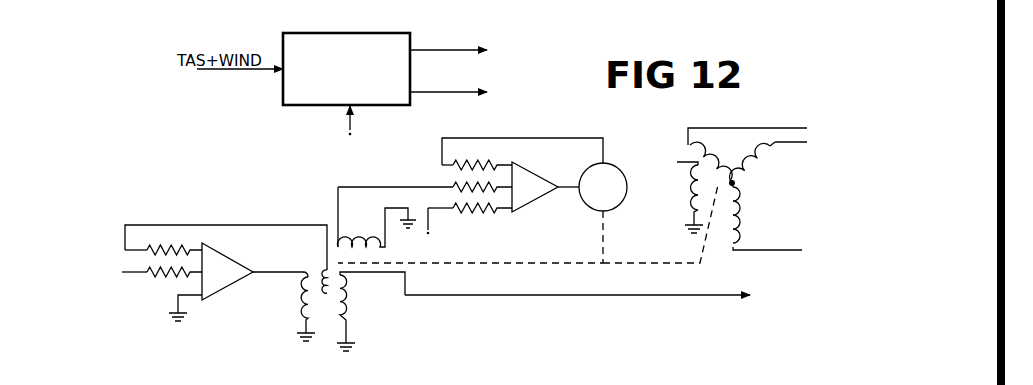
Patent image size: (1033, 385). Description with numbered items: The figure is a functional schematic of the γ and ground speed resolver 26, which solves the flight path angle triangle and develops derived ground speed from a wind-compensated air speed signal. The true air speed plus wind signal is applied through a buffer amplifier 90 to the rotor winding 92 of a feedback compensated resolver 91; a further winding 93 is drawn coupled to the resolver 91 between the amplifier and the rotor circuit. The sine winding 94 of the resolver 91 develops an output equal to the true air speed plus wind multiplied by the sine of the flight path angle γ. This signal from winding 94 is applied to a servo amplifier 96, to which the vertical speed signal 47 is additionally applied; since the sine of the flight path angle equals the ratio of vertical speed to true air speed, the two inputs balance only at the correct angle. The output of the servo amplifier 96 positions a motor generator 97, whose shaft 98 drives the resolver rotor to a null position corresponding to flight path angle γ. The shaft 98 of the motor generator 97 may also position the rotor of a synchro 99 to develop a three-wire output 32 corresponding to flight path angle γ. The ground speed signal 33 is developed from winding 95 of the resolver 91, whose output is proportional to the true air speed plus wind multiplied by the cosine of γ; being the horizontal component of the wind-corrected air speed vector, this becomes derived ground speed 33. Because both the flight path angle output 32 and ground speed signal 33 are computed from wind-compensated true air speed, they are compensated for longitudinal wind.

The γ and ground speed resolver 26 is at (360, 33).
The three-wire output 32 is at (443, 92).
The derived ground speed 33 is at (447, 50).
The vertical speed signal 47 is at (346, 123).
The buffer amplifier 90 is at (218, 254).
The feedback compensated resolver 91 is at (332, 300).
The rotor winding 92 is at (299, 308).
The feedback winding 93 is at (325, 269).
The sine winding 94 is at (378, 207).
The winding 95 is at (352, 307).
The servo amplifier 96 is at (533, 172).
The motor generator 97 is at (622, 201).
The shaft 98 is at (605, 226).
The synchro 99 is at (727, 260).